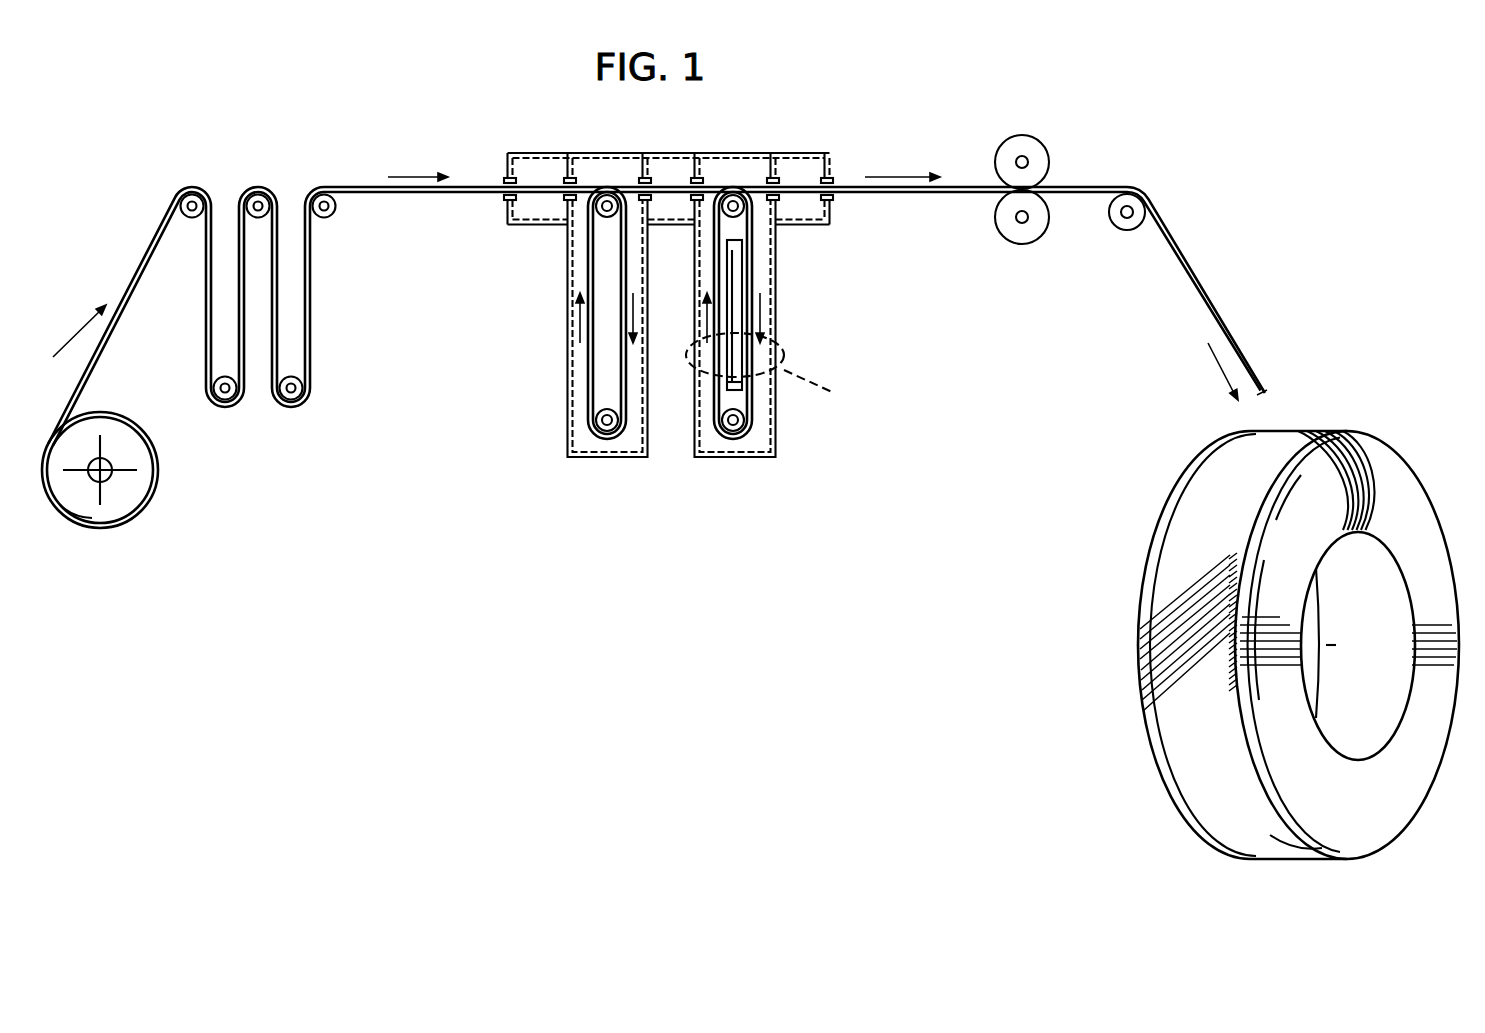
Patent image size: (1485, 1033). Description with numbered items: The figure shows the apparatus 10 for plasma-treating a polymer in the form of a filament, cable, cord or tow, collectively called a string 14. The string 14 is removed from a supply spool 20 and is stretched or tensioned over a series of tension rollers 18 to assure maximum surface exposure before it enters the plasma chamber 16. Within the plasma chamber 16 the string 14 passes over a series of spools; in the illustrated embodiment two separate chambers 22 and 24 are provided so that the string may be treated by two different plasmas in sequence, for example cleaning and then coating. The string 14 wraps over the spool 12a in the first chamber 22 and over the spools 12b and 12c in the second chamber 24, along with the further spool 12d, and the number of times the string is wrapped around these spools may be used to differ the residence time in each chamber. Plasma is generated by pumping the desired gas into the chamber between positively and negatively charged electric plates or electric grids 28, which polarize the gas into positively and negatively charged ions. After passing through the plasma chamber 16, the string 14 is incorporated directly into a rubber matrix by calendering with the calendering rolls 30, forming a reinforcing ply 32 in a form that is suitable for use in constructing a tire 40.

The apparatus 10 is at (486, 567).
The spool 12a is at (597, 428).
The spool 12b is at (603, 208).
The spool 12c is at (745, 425).
The roller 12d is at (740, 208).
The string 14 is at (410, 192).
The plasma chamber 16 is at (757, 146).
The tension rollers 18 is at (311, 195).
The spool 20 is at (123, 488).
The chamber 22 is at (612, 464).
The chamber 24 is at (738, 464).
The electric plates or electric grids 28 is at (693, 302).
The calendering rolls 30 is at (1037, 150).
The reinforcing ply 32 is at (1098, 187).
The tire 40 is at (1138, 728).